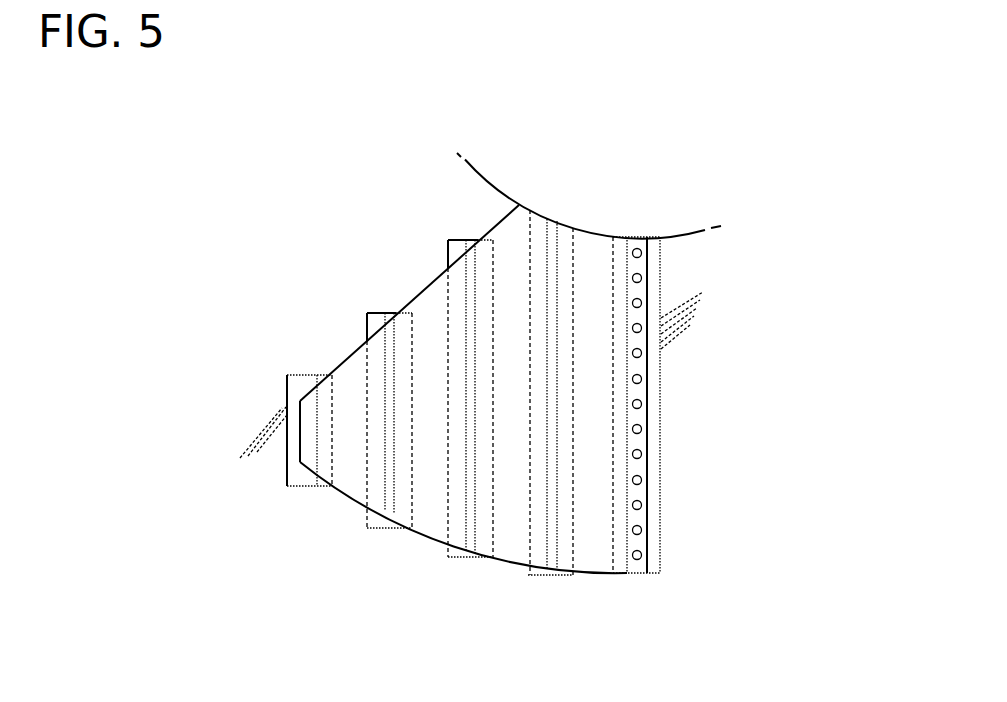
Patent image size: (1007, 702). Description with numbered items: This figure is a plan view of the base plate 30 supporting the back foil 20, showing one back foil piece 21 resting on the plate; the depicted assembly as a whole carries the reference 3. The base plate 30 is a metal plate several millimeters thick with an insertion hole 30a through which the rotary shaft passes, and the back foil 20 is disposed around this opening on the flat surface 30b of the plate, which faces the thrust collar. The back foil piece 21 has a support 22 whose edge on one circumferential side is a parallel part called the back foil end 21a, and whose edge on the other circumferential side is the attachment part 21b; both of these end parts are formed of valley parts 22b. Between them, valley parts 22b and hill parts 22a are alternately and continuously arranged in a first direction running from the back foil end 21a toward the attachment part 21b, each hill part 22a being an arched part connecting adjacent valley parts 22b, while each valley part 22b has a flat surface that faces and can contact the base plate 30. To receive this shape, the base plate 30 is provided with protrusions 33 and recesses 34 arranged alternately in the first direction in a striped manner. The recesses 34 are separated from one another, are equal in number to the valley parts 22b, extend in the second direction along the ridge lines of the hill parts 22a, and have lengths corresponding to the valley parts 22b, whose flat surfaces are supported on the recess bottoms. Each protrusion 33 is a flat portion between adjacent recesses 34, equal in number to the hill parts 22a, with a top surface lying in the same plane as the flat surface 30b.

The ultrasonic transducer device 3 is at (345, 213).
The back foil 20 is at (463, 346).
The back foil piece 21 is at (519, 204).
The back foil end 21a is at (308, 436).
The attachment part 21b is at (641, 417).
The support 22 is at (387, 427).
The hill part 22a is at (428, 472).
The valley part 22b is at (469, 479).
The base plate 30 is at (644, 329).
The insertion hole 30a is at (486, 181).
The flat surface 30b is at (686, 405).
The protrusion 33 is at (338, 371).
The recess 34 is at (418, 362).